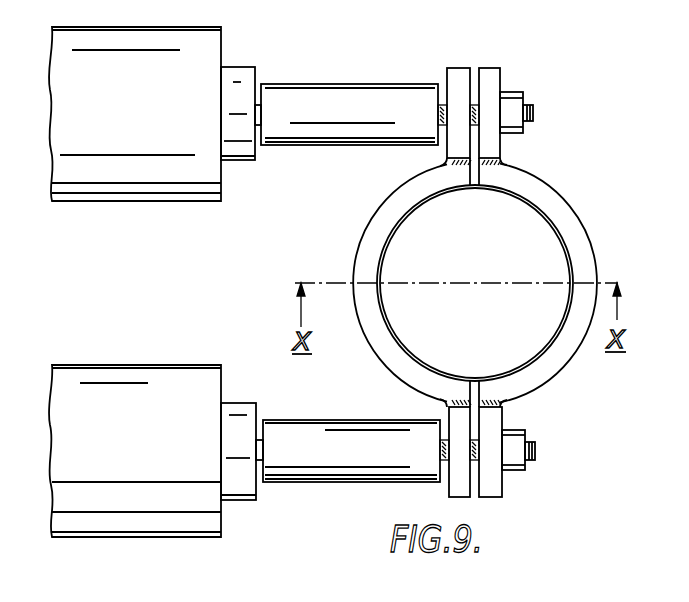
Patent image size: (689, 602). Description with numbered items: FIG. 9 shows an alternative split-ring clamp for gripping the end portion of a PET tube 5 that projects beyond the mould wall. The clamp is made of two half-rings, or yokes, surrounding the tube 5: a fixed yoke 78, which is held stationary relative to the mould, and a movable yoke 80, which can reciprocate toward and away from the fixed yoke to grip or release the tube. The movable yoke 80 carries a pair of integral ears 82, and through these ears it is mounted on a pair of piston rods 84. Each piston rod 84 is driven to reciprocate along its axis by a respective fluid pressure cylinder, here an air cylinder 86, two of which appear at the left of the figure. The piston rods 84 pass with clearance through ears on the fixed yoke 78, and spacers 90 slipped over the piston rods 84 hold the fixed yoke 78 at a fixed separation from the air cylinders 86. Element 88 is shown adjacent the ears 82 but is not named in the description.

The PET tube 5 is at (547, 364).
The fixed yoke 78 is at (378, 215).
The movable yoke 80 is at (558, 211).
The integral ears 82 is at (492, 81).
The piston rods 84 is at (443, 97).
The air cylinders 86 is at (207, 53).
The clamp flange 88 is at (458, 72).
The spacers 90 is at (344, 101).